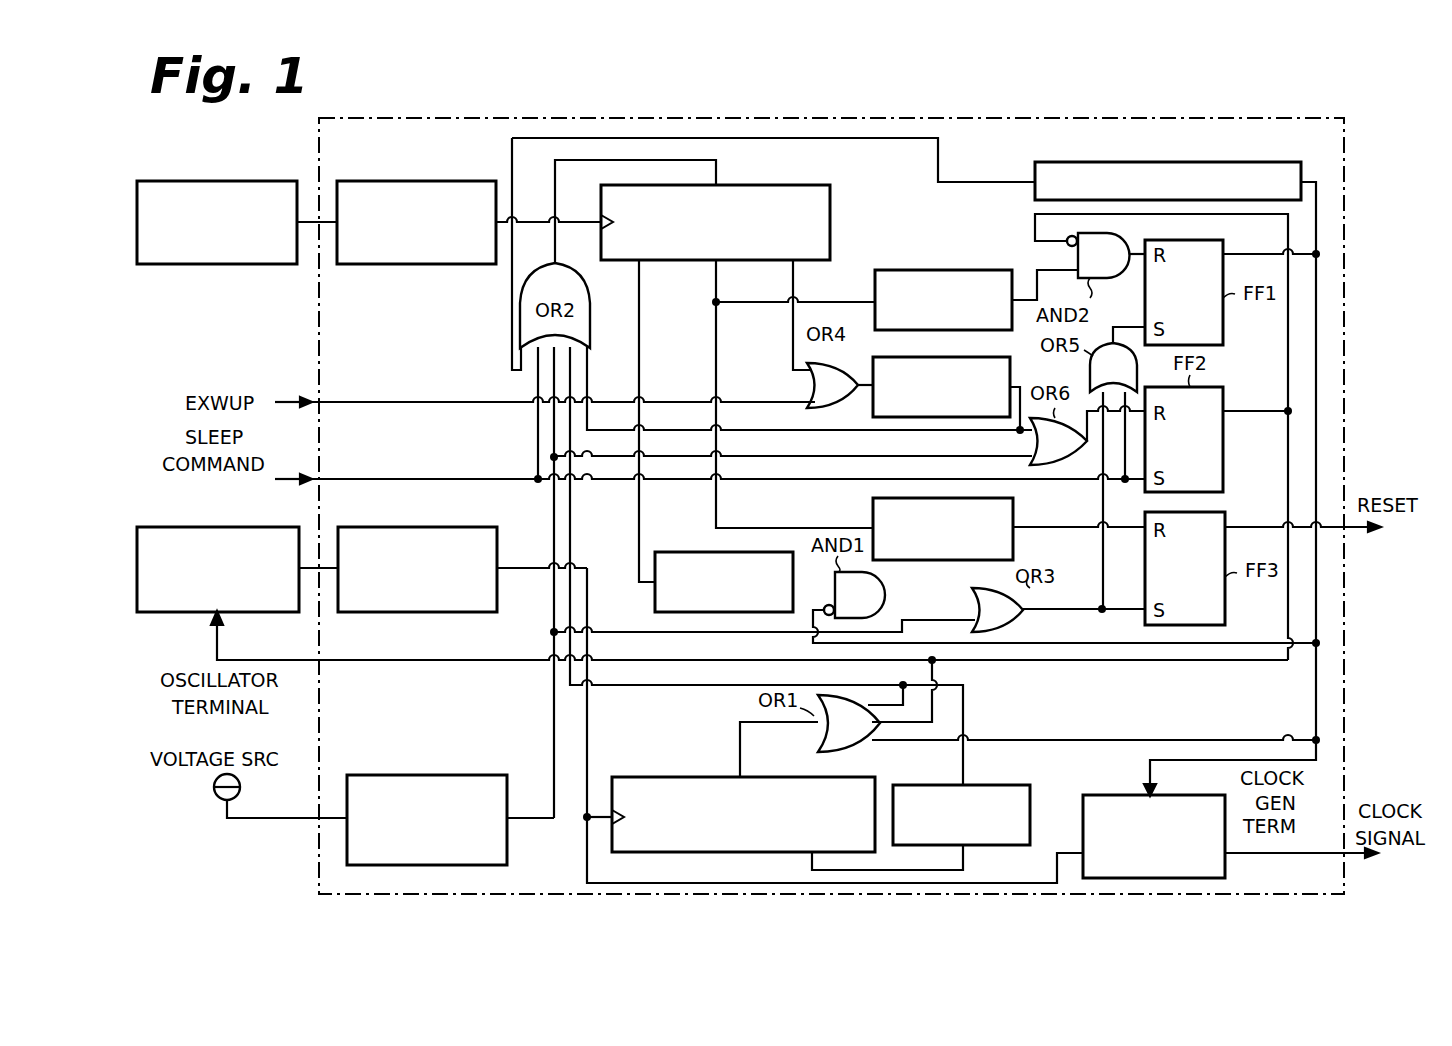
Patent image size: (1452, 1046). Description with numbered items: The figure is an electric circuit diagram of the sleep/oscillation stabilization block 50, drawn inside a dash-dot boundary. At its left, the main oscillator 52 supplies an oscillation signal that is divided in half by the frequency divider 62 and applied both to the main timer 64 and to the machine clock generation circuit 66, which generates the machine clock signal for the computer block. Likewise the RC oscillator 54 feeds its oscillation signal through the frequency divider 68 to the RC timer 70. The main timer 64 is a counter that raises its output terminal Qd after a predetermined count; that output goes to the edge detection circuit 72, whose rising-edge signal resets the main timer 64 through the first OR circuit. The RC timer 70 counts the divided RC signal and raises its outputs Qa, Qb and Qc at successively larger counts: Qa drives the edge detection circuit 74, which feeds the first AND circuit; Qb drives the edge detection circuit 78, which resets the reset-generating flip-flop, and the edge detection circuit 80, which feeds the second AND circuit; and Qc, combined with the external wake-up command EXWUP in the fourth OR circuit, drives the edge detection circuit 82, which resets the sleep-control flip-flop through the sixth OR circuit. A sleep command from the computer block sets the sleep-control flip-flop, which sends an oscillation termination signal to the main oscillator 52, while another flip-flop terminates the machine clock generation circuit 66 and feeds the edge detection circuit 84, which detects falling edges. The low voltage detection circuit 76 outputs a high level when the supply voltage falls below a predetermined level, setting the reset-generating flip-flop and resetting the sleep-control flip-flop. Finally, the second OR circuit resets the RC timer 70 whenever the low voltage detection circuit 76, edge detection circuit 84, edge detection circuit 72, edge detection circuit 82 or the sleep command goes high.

The sleep/oscillation stabilization block 50 is at (950, 118).
The main oscillator 52 is at (182, 527).
The RC oscillator 54 is at (197, 264).
The frequency divider 62 is at (497, 538).
The main timer 64 is at (695, 777).
The machine clock generation circuit 66 is at (1093, 795).
The frequency divider 68 is at (397, 181).
The RC timer 70 is at (770, 185).
The edge detection circuit 72 is at (998, 785).
The edge detection circuit 74 is at (678, 552).
The low voltage detection circuit 76 is at (388, 775).
The edge detection circuit 78 is at (1013, 507).
The edge detection circuit 80 is at (950, 270).
The edge detection circuit 82 is at (1010, 372).
The edge detection circuit 84 is at (1200, 162).